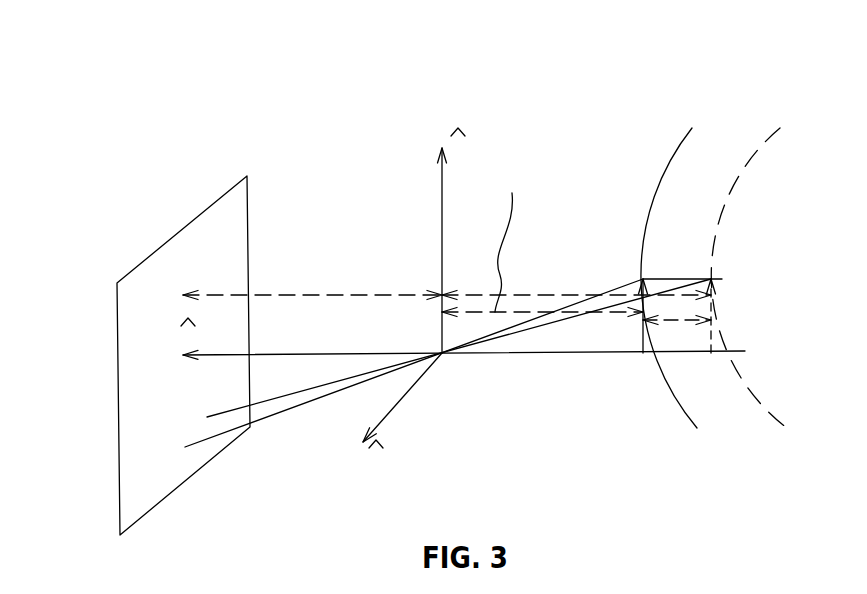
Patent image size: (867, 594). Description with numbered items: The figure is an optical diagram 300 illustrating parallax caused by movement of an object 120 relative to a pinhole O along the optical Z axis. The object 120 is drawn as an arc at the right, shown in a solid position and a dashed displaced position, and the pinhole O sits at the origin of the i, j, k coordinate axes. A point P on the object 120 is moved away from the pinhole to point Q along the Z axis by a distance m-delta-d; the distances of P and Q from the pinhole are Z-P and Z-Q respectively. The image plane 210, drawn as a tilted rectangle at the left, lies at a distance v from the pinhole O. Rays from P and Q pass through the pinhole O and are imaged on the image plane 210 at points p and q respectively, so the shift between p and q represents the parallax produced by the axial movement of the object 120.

The projection geometry / coordinate system 300 is at (660, 57).
The object 120 is at (690, 133).
The image plane 210 is at (118, 412).